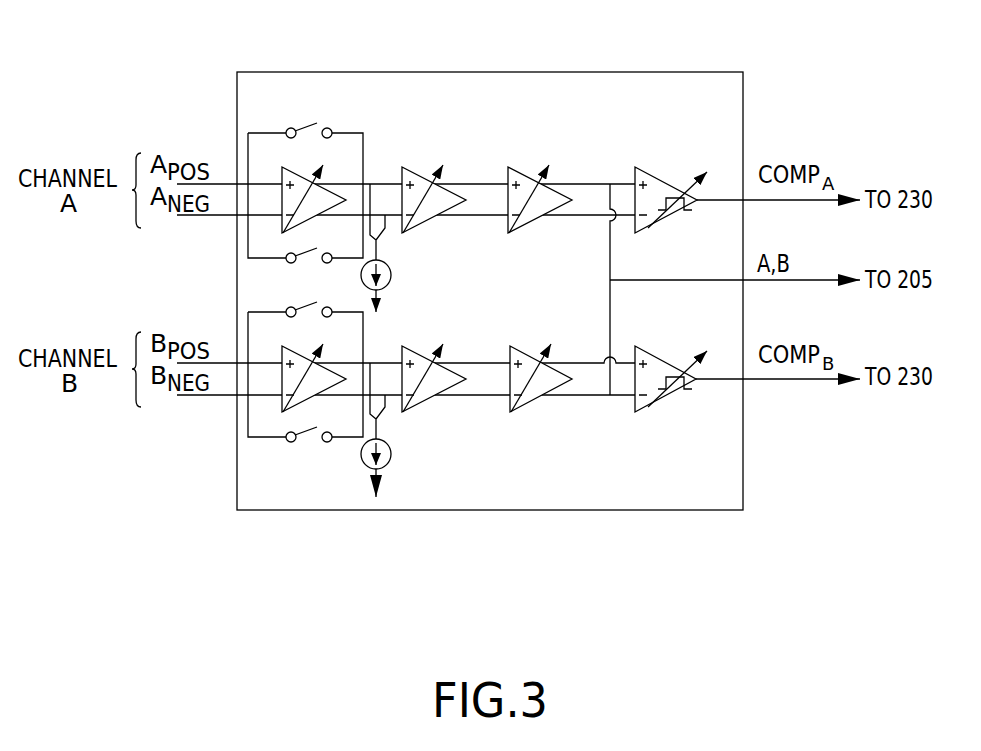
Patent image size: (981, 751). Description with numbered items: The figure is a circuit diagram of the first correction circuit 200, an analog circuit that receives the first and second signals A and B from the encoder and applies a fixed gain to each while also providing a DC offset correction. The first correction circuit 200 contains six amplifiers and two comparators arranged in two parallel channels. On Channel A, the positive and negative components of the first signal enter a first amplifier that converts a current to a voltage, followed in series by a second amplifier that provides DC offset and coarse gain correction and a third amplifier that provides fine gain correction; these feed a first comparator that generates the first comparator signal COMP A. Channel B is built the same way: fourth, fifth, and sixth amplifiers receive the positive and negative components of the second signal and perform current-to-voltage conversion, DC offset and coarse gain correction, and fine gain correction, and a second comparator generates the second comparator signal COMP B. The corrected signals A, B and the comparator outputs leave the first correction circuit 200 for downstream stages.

The first correction circuit 200 is at (588, 72).